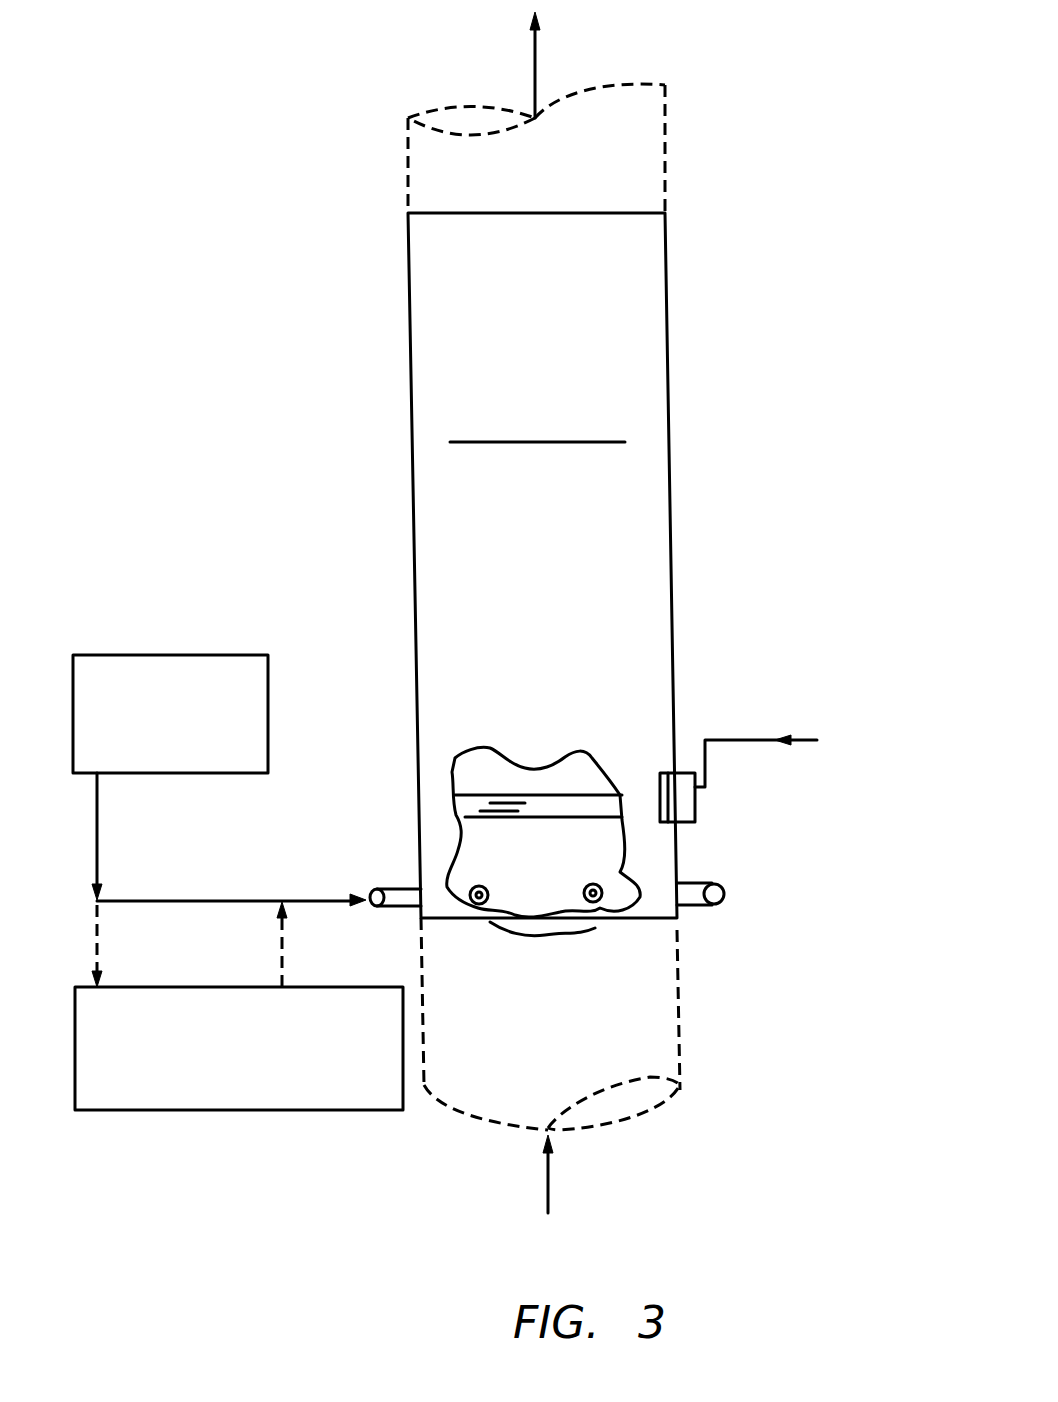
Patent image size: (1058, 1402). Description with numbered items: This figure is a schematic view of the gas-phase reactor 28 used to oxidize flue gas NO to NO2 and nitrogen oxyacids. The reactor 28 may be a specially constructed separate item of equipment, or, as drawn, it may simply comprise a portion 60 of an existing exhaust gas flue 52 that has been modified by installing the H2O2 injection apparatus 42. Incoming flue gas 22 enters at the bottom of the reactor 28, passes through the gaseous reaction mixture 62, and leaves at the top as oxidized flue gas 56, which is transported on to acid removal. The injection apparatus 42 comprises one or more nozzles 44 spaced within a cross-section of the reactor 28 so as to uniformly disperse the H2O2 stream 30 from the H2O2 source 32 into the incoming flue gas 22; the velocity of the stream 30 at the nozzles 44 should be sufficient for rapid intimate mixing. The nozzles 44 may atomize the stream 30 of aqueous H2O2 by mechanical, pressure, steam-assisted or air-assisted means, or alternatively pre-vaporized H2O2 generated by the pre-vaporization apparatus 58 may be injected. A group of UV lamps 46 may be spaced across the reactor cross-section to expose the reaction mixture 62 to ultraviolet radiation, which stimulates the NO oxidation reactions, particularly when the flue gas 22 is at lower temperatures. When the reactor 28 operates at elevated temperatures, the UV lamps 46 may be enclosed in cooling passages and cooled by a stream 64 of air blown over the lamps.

The reactor 28 is at (788, 318).
The portion of existing exhaust gas flue 60 is at (578, 212).
The oxidized flue gas 56 is at (535, 60).
The H2O2 source 32 is at (135, 668).
The H2O2 stream 30 is at (352, 896).
The pre-vaporization apparatus 58 is at (228, 987).
The gaseous reaction mixture 62 is at (548, 840).
The UV lamps 46 is at (582, 790).
The stream of air 64 is at (745, 740).
The H2O2 injection apparatus 42 is at (693, 873).
The nozzles 44 is at (592, 902).
The exhaust gas flue 52 is at (680, 1042).
The incoming flue gas 22 is at (548, 1180).